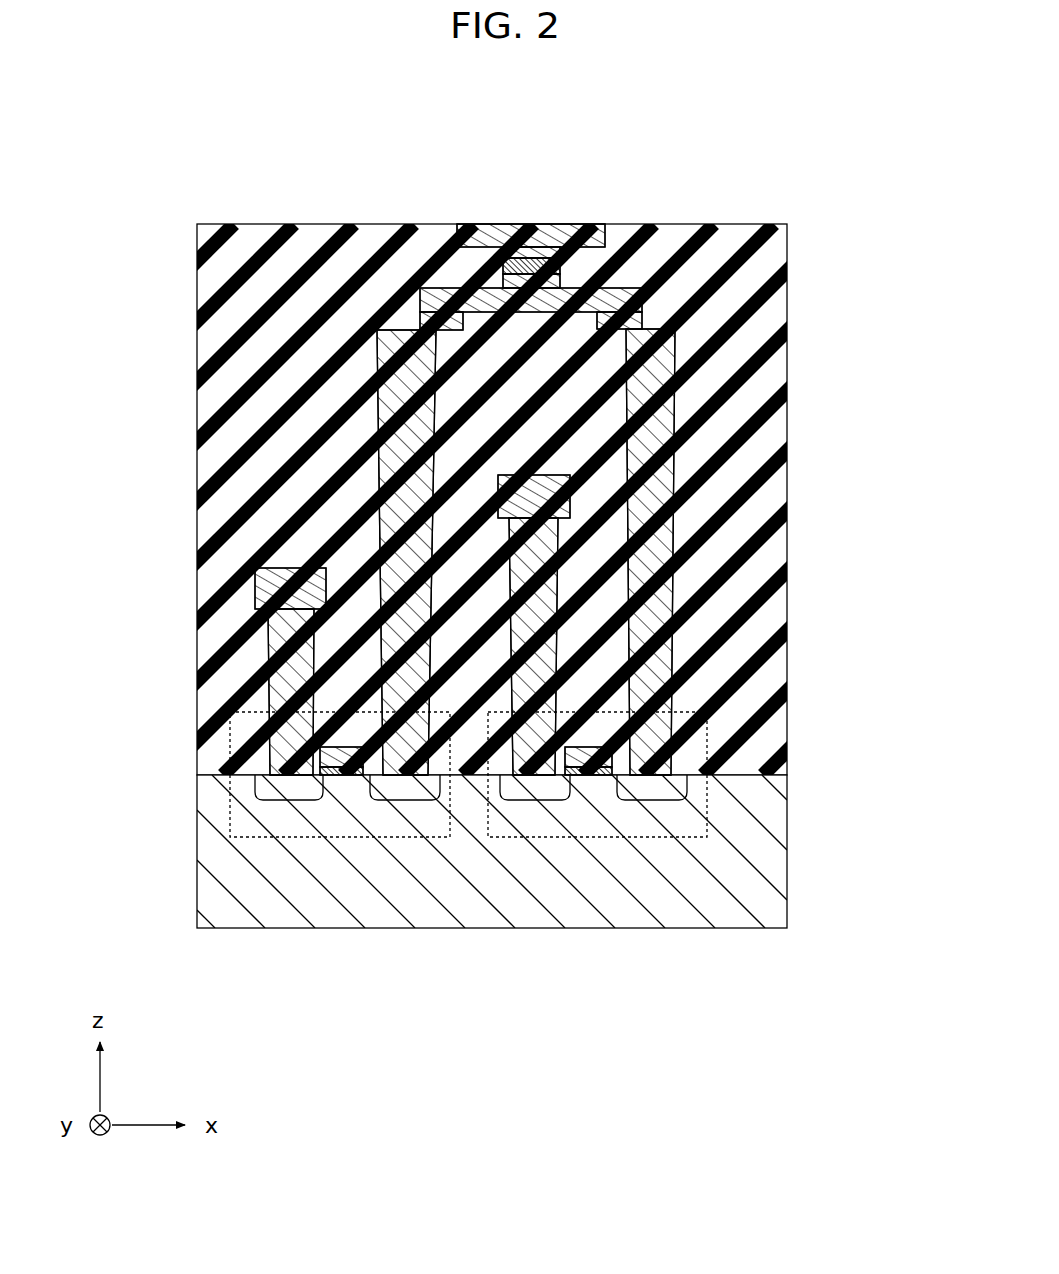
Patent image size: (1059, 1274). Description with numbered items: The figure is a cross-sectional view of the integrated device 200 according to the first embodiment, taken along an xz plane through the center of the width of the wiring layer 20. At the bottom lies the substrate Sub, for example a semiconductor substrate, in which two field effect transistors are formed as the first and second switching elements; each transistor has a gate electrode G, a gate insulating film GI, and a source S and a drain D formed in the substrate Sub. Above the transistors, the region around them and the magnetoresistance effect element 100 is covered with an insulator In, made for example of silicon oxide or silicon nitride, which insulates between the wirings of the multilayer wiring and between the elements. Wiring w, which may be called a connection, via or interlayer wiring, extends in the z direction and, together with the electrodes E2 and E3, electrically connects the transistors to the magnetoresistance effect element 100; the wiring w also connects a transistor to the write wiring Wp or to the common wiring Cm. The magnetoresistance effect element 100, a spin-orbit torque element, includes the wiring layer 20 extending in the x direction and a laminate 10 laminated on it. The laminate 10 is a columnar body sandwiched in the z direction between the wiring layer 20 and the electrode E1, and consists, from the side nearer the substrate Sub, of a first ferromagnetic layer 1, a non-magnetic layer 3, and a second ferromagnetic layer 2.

The integrated device 200 is at (855, 110).
The magnetoresistance effect element 100 is at (640, 258).
The laminate 10 is at (539, 203).
The first ferromagnetic layer 1 is at (528, 228).
The second ferromagnetic layer 2 is at (551, 252).
The non-magnetic layer 3 is at (540, 266).
The electrode E1 is at (590, 238).
The electrode E2 is at (440, 322).
The electrode E3 is at (647, 315).
The wiring layer 20 is at (441, 300).
The insulator In is at (781, 325).
The wiring w is at (382, 403).
The write wiring Wp is at (258, 588).
The common wiring Cm is at (574, 488).
The substrate Sub is at (772, 834).
The source S is at (286, 795).
The gate insulating film GI is at (336, 773).
The gate electrode G is at (352, 760).
The drain D is at (404, 795).